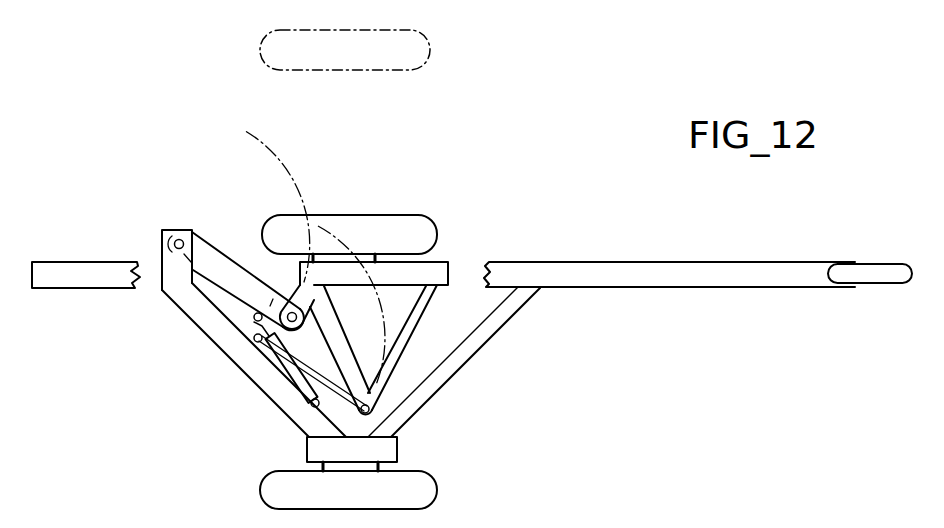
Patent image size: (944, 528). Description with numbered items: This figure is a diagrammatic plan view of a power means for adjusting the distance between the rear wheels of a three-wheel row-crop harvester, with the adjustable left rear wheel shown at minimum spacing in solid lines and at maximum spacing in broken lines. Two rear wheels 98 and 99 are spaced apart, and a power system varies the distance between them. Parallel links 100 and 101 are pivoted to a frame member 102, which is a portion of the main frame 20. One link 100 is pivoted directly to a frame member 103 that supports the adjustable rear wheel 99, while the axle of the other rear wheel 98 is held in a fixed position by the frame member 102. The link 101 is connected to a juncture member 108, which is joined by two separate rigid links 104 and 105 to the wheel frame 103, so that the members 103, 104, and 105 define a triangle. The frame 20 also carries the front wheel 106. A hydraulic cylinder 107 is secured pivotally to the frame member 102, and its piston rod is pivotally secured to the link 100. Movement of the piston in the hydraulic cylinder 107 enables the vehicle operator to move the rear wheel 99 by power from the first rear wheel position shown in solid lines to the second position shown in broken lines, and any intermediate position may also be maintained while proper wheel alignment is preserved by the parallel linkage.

The main frame 20 is at (728, 289).
The rear wheel 98 is at (437, 489).
The adjustable rear wheel 99 is at (428, 215).
The link 100 is at (224, 263).
The link 101 is at (327, 382).
The frame member 102 is at (242, 362).
The frame member 103 is at (433, 268).
The rigid link 104 is at (345, 344).
The rigid link 105 is at (418, 327).
The front wheel 106 is at (886, 284).
The hydraulic cylinder 107 is at (287, 383).
The juncture member 108 is at (378, 401).